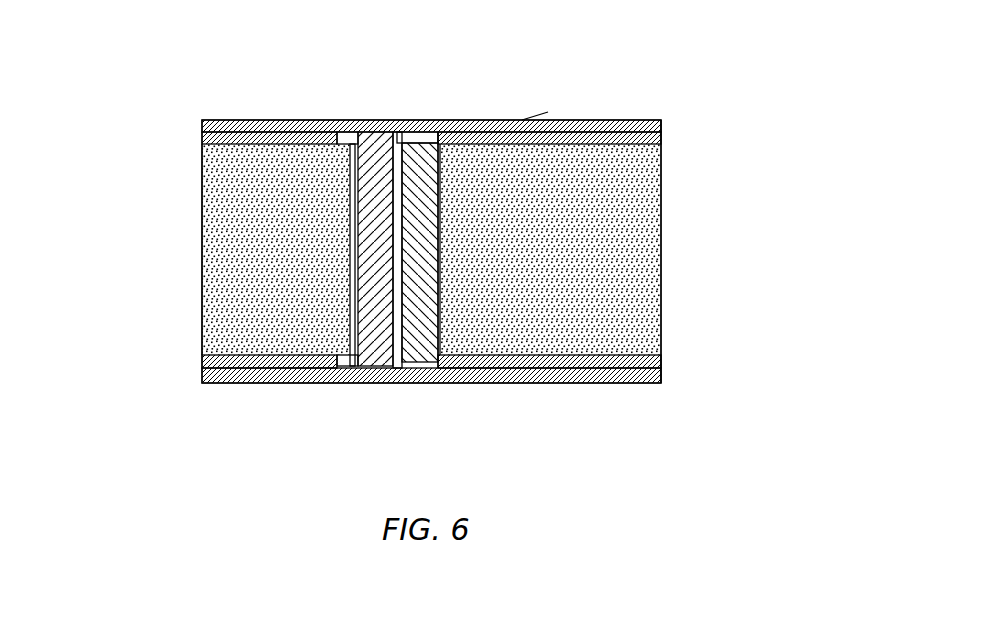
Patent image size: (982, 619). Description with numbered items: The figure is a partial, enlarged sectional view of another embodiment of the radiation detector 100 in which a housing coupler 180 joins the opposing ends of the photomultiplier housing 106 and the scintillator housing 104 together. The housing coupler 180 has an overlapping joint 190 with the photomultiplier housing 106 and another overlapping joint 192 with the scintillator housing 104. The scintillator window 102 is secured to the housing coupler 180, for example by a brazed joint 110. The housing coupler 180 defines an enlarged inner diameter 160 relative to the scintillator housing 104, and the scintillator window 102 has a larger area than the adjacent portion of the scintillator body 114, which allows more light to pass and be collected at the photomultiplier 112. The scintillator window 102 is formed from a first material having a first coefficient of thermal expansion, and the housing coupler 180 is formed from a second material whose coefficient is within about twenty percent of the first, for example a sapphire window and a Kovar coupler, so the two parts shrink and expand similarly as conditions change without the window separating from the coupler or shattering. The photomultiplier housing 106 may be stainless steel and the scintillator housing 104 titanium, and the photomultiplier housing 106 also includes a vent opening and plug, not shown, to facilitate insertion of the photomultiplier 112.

The radiation detector 100 is at (622, 35).
The scintillator window 102 is at (477, 46).
The scintillator housing 104 is at (316, 25).
The photomultiplier housing 106 is at (779, 71).
The brazed joint 110 is at (406, 68).
The photomultiplier 112 is at (767, 196).
The scintillator body 114 is at (207, 183).
The enlarged inner diameter 160 is at (340, 382).
The housing coupler 180 is at (308, 116).
The overlapping joint 190 is at (515, 383).
The overlapping joint 192 is at (246, 378).